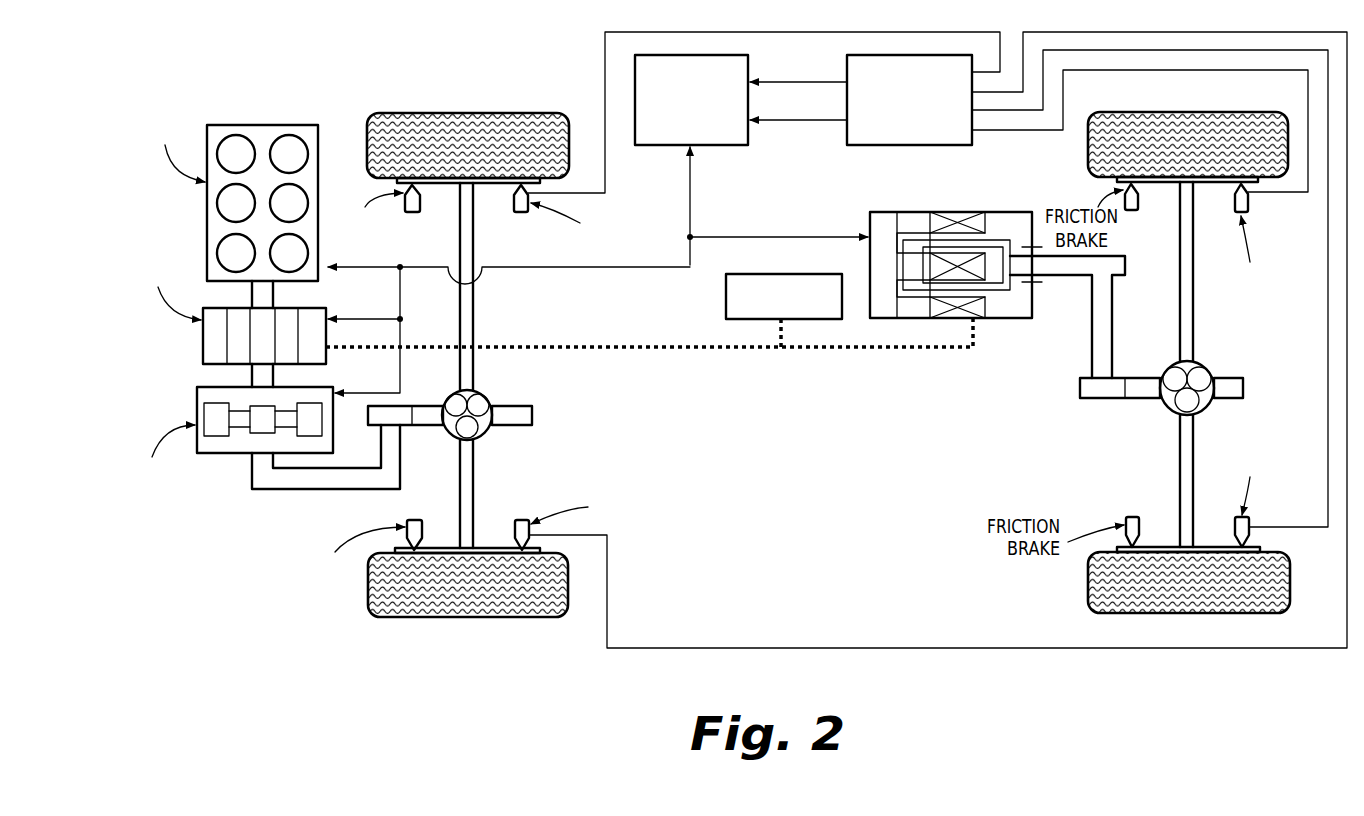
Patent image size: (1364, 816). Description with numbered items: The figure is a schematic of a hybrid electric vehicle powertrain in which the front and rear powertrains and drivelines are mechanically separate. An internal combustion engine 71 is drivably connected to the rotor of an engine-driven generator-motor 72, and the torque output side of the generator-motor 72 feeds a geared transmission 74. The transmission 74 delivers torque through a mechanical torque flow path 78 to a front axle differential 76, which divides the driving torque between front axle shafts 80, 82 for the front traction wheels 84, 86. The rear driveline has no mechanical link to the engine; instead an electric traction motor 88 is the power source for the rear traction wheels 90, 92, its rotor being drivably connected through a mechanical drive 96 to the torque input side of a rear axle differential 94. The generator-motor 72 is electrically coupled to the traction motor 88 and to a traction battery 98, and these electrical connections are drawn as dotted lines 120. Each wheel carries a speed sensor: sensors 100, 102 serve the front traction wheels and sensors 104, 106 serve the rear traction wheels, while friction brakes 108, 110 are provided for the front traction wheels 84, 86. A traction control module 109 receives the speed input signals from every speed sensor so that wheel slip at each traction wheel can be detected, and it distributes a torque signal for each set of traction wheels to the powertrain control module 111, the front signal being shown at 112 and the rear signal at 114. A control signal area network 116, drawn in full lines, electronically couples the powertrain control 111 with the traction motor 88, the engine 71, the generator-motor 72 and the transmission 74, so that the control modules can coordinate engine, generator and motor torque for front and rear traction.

The internal combustion engine 71 is at (267, 123).
The generator-motor 72 is at (201, 335).
The geared transmission 74 is at (228, 450).
The front axle differential 76 is at (480, 390).
The mechanical torque flow path 78 is at (397, 460).
The front axle shaft 80 is at (465, 302).
The front axle shaft 82 is at (472, 460).
The front traction wheel 84 is at (538, 115).
The front traction wheel 86 is at (540, 605).
The electric traction motor 88 is at (1015, 320).
The rear traction wheel 90 is at (1240, 112).
The rear traction wheel 92 is at (1255, 613).
The rear axle differential 94 is at (1197, 363).
The mechanical drive 96 is at (1110, 308).
The traction battery 98 is at (726, 300).
The speed sensor 100 is at (514, 197).
The speed sensor 102 is at (515, 540).
The speed sensor 104 is at (1235, 195).
The speed sensor 106 is at (1237, 530).
The friction brake 108 is at (421, 205).
The traction control module 109 is at (857, 146).
The friction brake 110 is at (422, 540).
The powertrain control module 111 is at (720, 147).
The front traction wheel torque signal 112 is at (842, 80).
The rear traction wheel torque signal 114 is at (793, 122).
The control signal area network 116 is at (582, 268).
The electrical connections 120 is at (898, 350).